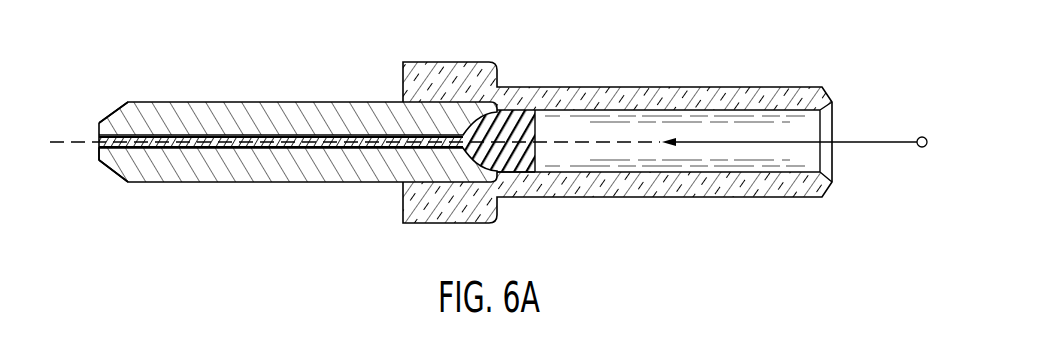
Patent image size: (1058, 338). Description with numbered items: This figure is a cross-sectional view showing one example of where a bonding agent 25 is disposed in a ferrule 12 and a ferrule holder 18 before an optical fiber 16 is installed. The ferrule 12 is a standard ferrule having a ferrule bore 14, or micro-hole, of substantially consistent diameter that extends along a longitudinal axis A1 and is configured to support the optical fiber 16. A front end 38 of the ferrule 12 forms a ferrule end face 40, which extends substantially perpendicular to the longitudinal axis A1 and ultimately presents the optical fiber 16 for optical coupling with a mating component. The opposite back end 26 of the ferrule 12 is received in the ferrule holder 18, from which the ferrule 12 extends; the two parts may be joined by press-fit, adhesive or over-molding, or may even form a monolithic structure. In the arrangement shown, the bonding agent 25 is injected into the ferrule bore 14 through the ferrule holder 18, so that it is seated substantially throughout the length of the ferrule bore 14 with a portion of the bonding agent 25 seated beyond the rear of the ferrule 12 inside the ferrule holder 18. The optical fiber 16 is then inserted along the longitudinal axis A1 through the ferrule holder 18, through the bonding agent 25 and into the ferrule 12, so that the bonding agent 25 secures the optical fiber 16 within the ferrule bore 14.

The ferrule 12 is at (305, 118).
The ferrule bore 14 is at (272, 155).
The optical fiber 16 is at (925, 133).
The ferrule holder 18 is at (745, 87).
The bonding agent 25 is at (521, 107).
The back end 26 is at (512, 173).
The front end 38 is at (98, 131).
The ferrule end face 40 is at (72, 117).
The longitudinal axis A1 is at (63, 143).